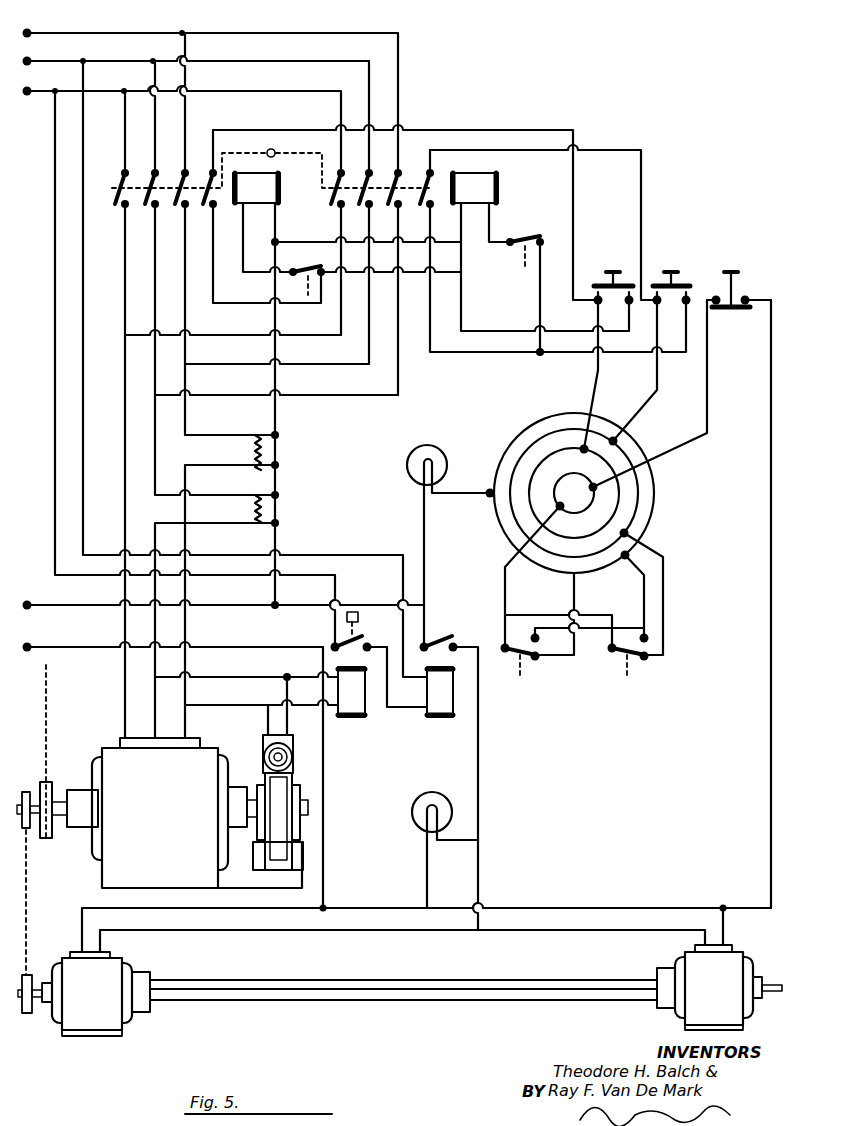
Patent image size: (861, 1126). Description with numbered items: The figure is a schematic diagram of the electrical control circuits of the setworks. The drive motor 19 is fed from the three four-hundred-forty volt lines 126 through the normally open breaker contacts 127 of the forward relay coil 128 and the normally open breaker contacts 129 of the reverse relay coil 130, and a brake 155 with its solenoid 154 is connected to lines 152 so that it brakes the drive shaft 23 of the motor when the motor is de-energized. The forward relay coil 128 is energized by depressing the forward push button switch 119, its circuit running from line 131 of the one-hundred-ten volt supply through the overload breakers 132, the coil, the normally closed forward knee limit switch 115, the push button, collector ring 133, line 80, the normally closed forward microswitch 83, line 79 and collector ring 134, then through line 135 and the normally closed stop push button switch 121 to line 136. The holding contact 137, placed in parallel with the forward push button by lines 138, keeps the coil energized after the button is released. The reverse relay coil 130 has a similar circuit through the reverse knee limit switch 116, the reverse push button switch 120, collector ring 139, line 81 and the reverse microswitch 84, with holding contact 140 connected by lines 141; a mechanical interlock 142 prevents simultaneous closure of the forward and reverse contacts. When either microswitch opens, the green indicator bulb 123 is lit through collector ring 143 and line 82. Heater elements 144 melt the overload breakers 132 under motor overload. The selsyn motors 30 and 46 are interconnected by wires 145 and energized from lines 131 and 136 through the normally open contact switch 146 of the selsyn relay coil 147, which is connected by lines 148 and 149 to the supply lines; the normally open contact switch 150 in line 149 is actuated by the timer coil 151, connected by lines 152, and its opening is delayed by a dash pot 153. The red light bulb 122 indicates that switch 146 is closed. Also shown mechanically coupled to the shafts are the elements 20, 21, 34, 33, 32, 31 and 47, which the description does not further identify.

The 440 volt lines 126 is at (47, 91).
The normally open breaker contacts 127 is at (168, 173).
The holding contact 137 is at (205, 170).
The lines 138 is at (288, 130).
The mechanical interlock 142 is at (295, 160).
The forward relay coil 128 is at (263, 391).
The normally open breaker contacts 129 is at (403, 178).
The holding contact 140 is at (421, 168).
The lines 141 is at (607, 148).
The reverse relay coil 130 is at (540, 252).
The reverse knee limit switch 116 is at (535, 238).
The forward knee limit switch 115 is at (308, 270).
The forward push button switch 119 is at (612, 270).
The reverse push button switch 120 is at (675, 270).
The stop push button switch 121 is at (733, 270).
The line 135 is at (682, 450).
The collector ring 139 is at (627, 452).
The collector ring 143 is at (515, 440).
The collector ring 133 is at (557, 424).
The collector ring 134 is at (596, 505).
The green indicator bulb 123 is at (413, 449).
The normally open contact switch 146 is at (443, 635).
The line 131 is at (38, 603).
The line 136 is at (43, 646).
The line 149 is at (55, 503).
The line 148 is at (88, 435).
The heater elements 144 is at (258, 493).
The overload breakers 132 is at (278, 450).
The normally open contact switch 150 is at (337, 642).
The dash pot 153 is at (360, 617).
The line 79 is at (493, 588).
The line 80 is at (572, 595).
The line 82 is at (646, 599).
The line 81 is at (666, 595).
The forward microswitch 83 is at (520, 658).
The reverse microswitch 84 is at (627, 658).
The timer coil 151 is at (352, 710).
The selsyn relay coil 147 is at (442, 710).
The lines 152 is at (265, 703).
The solenoid 154 is at (263, 752).
The brake 155 is at (303, 791).
The drive shaft 23 is at (310, 810).
The drive motor 19 is at (160, 813).
The set shaft connection 20 is at (50, 720).
The disc 21 is at (52, 835).
The disc 34 is at (28, 835).
The connection 33 is at (28, 934).
The disc 32 is at (25, 1015).
The shaft 31 is at (37, 1005).
The selsyn motor 30 is at (406, 969).
The wires 145 is at (375, 1000).
The light bulb 122 is at (420, 825).
The selsyn motor 46 is at (705, 969).
The shaft 47 is at (765, 975).